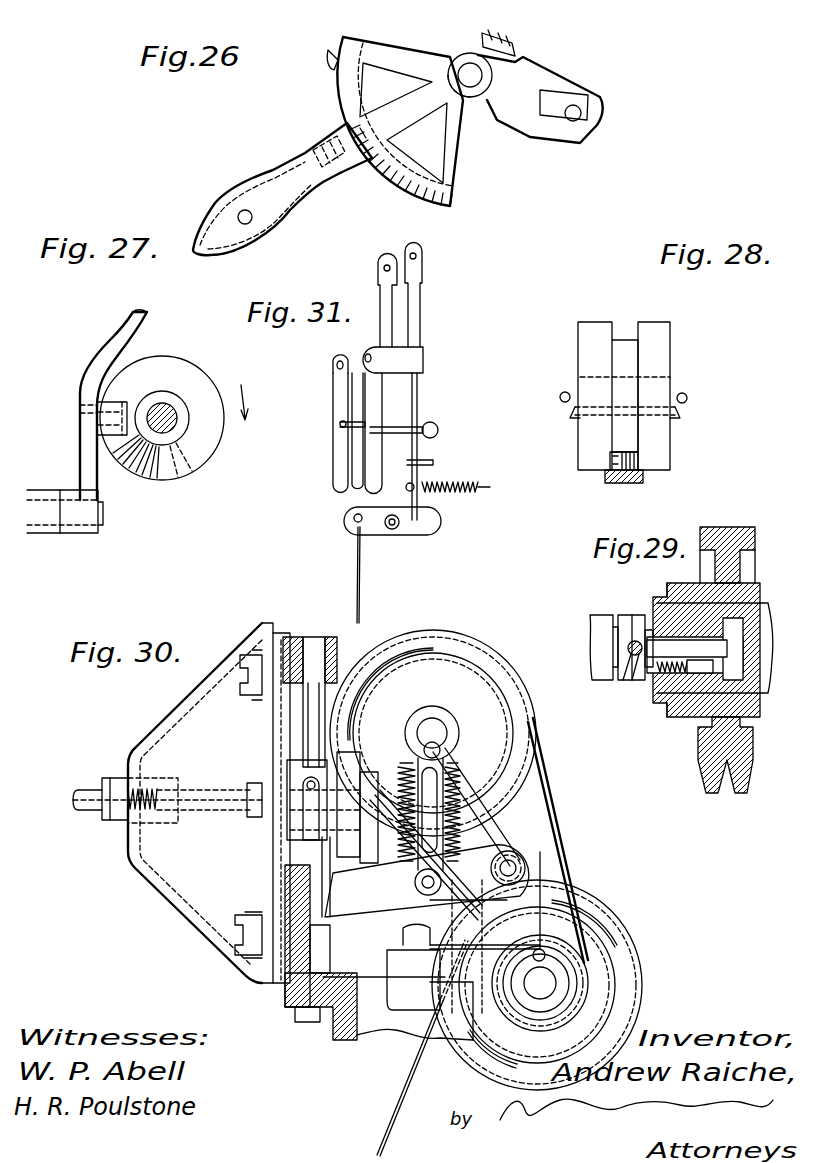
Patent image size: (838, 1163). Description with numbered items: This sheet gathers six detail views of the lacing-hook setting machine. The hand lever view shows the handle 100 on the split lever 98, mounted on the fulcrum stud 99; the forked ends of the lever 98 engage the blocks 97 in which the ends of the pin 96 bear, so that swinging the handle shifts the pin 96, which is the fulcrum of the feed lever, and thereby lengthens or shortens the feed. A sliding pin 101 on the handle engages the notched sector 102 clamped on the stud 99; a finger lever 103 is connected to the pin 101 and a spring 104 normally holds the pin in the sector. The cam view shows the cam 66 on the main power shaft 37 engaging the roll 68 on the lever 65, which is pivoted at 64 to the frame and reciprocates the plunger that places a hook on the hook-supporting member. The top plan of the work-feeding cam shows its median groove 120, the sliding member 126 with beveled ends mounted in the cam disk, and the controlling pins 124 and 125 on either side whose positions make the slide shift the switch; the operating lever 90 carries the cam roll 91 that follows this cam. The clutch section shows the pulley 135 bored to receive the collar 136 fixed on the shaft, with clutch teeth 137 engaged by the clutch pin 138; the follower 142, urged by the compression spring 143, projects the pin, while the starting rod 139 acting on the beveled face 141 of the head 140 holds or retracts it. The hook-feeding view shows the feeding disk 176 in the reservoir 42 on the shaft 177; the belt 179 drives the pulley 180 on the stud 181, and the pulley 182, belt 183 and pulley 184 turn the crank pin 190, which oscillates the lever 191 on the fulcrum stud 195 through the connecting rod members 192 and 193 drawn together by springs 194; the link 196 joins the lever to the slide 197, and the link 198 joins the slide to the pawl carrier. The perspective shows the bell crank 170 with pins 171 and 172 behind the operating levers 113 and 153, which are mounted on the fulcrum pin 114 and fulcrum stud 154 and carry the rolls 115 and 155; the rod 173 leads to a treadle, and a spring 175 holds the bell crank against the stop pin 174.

In FIG. 27, the main power shaft 37 is at (177, 418).
In FIG. 30, the hook reservoir 42 is at (175, 743).
In FIG. 27, the pivot 64 is at (103, 520).
In FIG. 27, the lever 65 is at (127, 323).
In FIG. 27, the cam 66 is at (162, 418).
In FIG. 27, the roll 68 is at (112, 432).
In FIG. 28, the operating lever 90 is at (608, 477).
In FIG. 28, the cam roll 91 is at (633, 478).
In FIG. 26, the pin 96 is at (575, 105).
In FIG. 26, the blocks 97 is at (597, 124).
In FIG. 26, the split lever 98 is at (464, 86).
In FIG. 26, the fulcrum stud 99 is at (470, 73).
In FIG. 26, the handle 100 is at (420, 133).
In FIG. 26, the sliding pin 101 is at (363, 130).
In FIG. 26, the notched sector 102 is at (423, 203).
In FIG. 26, the finger lever 103 is at (280, 177).
In FIG. 26, the spring 104 is at (245, 209).
In FIG. 31, the operating lever 113 is at (384, 268).
In FIG. 31, the fulcrum pin 114 is at (332, 366).
In FIG. 31, the roll 115 is at (357, 492).
In FIG. 28, the median groove 120 is at (627, 335).
In FIG. 28, the controlling pin 124 is at (565, 392).
In FIG. 28, the controlling pin 125 is at (684, 393).
In FIG. 28, the sliding member 126 is at (676, 418).
In FIG. 29, the pulley 135 is at (728, 527).
In FIG. 29, the collar 136 is at (660, 597).
In FIG. 29, the clutch teeth 137 is at (766, 683).
In FIG. 29, the clutch pin 138 is at (722, 649).
In FIG. 29, the starting rod 139 is at (633, 656).
In FIG. 29, the head 140 is at (612, 617).
In FIG. 29, the beveled face 141 is at (617, 672).
In FIG. 29, the follower 142 is at (695, 694).
In FIG. 29, the compression spring 143 is at (660, 702).
In FIG. 31, the operating lever 153 is at (423, 302).
In FIG. 31, the fulcrum stud 154 is at (365, 350).
In FIG. 31, the cam roll 155 is at (415, 483).
In FIG. 31, the bell crank 170 is at (362, 513).
In FIG. 31, the pin 171 is at (352, 433).
In FIG. 31, the pin 172 is at (407, 417).
In FIG. 31, the rod 173 is at (360, 610).
In FIG. 31, the stop pin 174 is at (423, 459).
In FIG. 31, the spring 175 is at (460, 493).
In FIG. 30, the feeding disk 176 is at (263, 749).
In FIG. 30, the shaft 177 is at (167, 795).
In FIG. 30, the belt 179 is at (398, 1085).
In FIG. 30, the pulley 180 is at (610, 930).
In FIG. 30, the stud 181 is at (545, 983).
In FIG. 30, the pulley 182 is at (590, 968).
In FIG. 30, the belt 183 is at (552, 782).
In FIG. 30, the pulley 184 is at (485, 645).
In FIG. 30, the crank pin 190 is at (434, 745).
In FIG. 30, the lever 191 is at (365, 911).
In FIG. 30, the connecting rod member 192 is at (442, 750).
In FIG. 30, the connecting rod member 193 is at (413, 868).
In FIG. 30, the springs 194 is at (403, 782).
In FIG. 30, the fulcrum stud 195 is at (512, 868).
In FIG. 30, the link 196 is at (308, 847).
In FIG. 30, the slide 197 is at (310, 717).
In FIG. 30, the link 198 is at (330, 876).